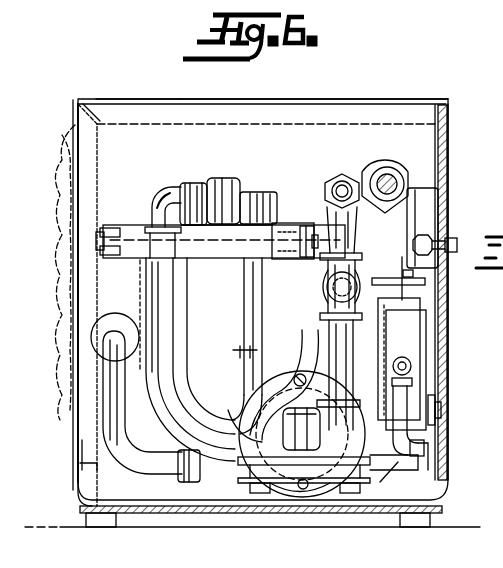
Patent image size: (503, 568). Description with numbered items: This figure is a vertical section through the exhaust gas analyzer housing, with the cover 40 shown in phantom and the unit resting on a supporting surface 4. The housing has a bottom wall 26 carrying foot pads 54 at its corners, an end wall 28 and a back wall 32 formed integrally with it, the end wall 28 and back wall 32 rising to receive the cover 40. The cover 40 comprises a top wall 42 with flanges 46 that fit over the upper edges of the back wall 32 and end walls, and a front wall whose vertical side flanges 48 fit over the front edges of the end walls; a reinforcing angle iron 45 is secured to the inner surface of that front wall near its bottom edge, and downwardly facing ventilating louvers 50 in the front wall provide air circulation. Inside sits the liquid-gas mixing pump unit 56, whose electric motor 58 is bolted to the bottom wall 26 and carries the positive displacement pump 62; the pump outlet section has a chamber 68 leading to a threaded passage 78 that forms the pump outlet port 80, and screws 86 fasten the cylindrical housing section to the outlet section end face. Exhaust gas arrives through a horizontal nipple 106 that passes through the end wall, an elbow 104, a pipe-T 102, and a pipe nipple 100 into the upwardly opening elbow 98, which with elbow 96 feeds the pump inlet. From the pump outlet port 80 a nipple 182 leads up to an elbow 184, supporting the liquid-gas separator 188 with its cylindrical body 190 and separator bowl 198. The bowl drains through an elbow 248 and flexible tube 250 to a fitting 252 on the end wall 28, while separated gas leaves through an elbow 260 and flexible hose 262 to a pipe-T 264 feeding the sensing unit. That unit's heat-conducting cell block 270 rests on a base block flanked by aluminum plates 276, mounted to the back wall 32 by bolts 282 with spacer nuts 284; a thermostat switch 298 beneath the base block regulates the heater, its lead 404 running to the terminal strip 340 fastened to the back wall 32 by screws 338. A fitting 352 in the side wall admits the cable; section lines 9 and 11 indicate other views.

The floor 4 is at (60, 527).
The section line 11 is at (396, 265).
The section line 9 is at (258, 348).
The bottom wall 26 is at (138, 512).
The end wall 28 is at (132, 192).
The back wall 32 is at (447, 150).
The cover 40 is at (322, 95).
The top wall 42 is at (133, 98).
The reinforcing angle iron 45 is at (82, 462).
The flanges 46 is at (236, 110).
The flanges 48 is at (80, 158).
The ventilating louvers 50 is at (57, 212).
The foot pads 54 is at (90, 524).
The liquid-gas mixing pump unit 56 is at (323, 341).
The electric motor 58 is at (300, 346).
The positive displacement pump 62 is at (316, 493).
The outlet chamber 68 is at (238, 392).
The threaded passage 78 is at (238, 418).
The pump outlet port 80 is at (230, 356).
The screws 86 is at (300, 482).
The elbow 96 is at (283, 472).
The elbow 98 is at (372, 352).
The pipe nipple 100 is at (348, 338).
The pipe-T 102 is at (320, 220).
The elbow 104 is at (343, 172).
The horizontal nipple 106 is at (328, 185).
The nipple 182 is at (220, 241).
The elbow 184 is at (262, 191).
The liquid-gas separator 188 is at (244, 170).
The cylindrical body 190 is at (225, 186).
The separator bowl 198 is at (146, 292).
The elbow 248 is at (192, 482).
The flexible tube 250 is at (100, 372).
The fitting 252 is at (114, 328).
The elbow 260 is at (162, 190).
The flexible hose 262 is at (177, 278).
The pipe-T 264 is at (410, 372).
The cell block 270 is at (447, 302).
The aluminum plate 276 is at (427, 330).
The bolts 282 is at (447, 412).
The spacer nut 284 is at (437, 420).
The thermostat switch 298 is at (413, 450).
The screws 338 is at (452, 240).
The terminal strip 340 is at (425, 189).
The fitting 352 is at (388, 176).
The lead 404 is at (418, 464).